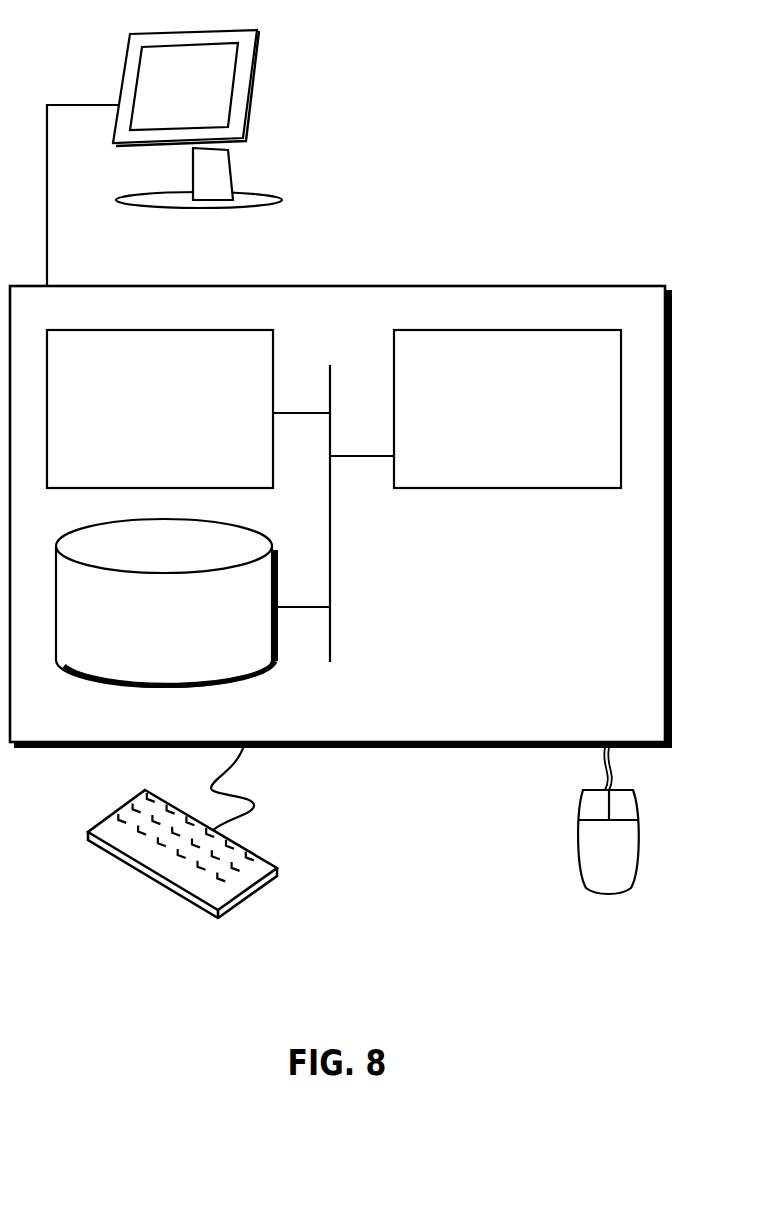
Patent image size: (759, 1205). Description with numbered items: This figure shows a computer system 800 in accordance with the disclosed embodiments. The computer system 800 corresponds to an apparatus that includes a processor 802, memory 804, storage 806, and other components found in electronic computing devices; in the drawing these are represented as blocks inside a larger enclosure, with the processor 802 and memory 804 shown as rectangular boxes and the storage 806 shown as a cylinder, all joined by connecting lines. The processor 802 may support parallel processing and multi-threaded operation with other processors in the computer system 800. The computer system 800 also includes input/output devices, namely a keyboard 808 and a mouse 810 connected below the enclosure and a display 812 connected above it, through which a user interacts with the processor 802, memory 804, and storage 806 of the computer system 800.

The computer system 800 is at (383, 255).
The processor 802 is at (533, 421).
The memory 804 is at (183, 422).
The storage 806 is at (189, 632).
The keyboard 808 is at (105, 853).
The mouse 810 is at (587, 863).
The display 812 is at (164, 158).